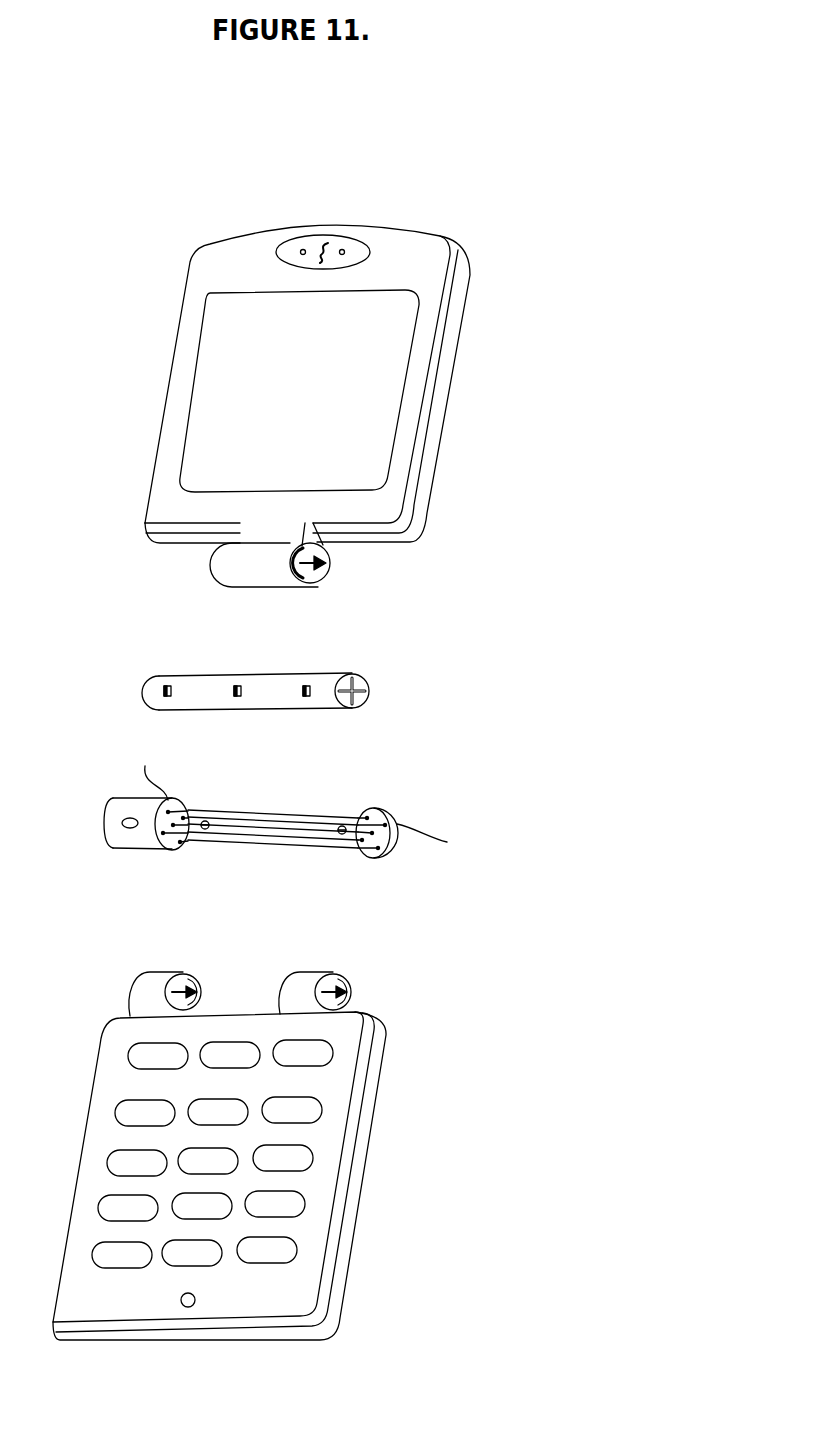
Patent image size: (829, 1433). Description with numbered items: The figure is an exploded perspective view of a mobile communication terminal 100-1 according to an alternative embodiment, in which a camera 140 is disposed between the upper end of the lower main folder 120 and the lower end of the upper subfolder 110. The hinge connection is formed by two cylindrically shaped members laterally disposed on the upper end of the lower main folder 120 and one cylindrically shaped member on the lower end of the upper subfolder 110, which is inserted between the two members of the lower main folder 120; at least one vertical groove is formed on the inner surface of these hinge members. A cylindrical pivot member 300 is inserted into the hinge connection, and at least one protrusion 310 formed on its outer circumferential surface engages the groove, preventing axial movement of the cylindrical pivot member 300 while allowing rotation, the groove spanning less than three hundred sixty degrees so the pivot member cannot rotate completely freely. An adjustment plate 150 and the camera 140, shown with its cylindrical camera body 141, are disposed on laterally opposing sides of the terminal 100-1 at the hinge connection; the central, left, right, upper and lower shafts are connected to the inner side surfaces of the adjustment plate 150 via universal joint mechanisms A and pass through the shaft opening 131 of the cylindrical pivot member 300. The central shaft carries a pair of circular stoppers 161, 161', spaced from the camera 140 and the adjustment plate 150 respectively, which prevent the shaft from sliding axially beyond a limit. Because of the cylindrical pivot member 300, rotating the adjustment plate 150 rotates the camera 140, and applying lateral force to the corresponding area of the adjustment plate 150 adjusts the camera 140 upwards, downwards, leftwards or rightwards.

The mobile communication terminal 100-1 is at (160, 254).
The upper subfolder 110 is at (428, 297).
The lower main folder 120 is at (327, 1142).
The shaft opening 131 is at (147, 691).
The camera 140 is at (72, 770).
The hinge cylinder 141 is at (108, 821).
The adjustment plate 150 is at (380, 807).
The circular stopper 161 is at (210, 855).
The circular stopper 161' is at (344, 859).
The cylindrical pivot member 300 is at (272, 701).
The protrusion 310 is at (170, 684).